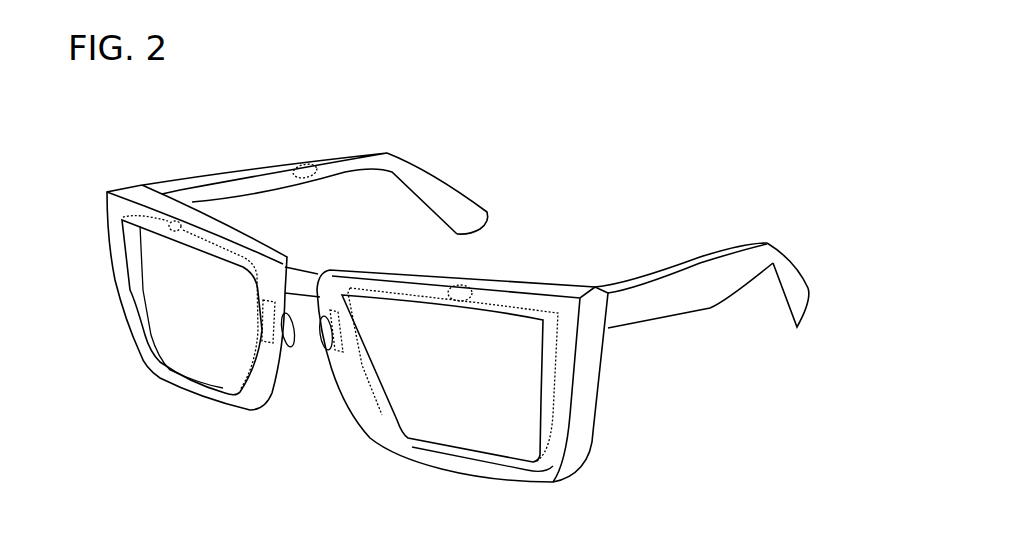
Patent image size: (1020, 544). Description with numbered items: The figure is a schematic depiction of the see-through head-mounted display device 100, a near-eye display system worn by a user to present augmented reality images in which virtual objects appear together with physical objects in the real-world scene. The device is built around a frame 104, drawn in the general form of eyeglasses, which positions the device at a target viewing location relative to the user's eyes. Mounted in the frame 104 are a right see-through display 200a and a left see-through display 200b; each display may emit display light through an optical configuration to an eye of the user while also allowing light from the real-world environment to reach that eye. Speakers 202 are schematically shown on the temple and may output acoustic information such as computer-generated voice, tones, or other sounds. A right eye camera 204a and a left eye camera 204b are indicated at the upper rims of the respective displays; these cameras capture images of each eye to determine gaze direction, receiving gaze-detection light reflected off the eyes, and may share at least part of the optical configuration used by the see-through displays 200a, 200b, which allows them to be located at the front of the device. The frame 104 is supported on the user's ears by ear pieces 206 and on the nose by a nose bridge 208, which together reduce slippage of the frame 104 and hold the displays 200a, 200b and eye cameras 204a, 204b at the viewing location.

The see-through head-mounted display device 100 is at (590, 104).
The frame 104 is at (118, 188).
The right see-through display 200a is at (142, 293).
The left see-through display 200b is at (410, 440).
The speakers 202 is at (300, 169).
The right eye camera 204a is at (180, 229).
The left eye camera 204b is at (463, 286).
The ear pieces 206 is at (412, 152).
The nose bridge 208 is at (303, 262).